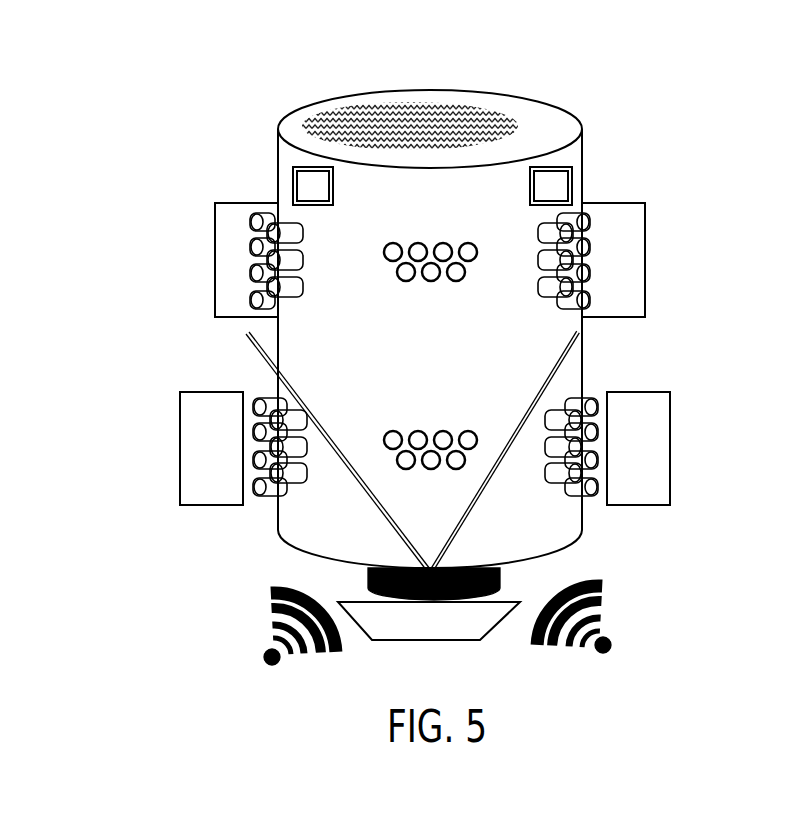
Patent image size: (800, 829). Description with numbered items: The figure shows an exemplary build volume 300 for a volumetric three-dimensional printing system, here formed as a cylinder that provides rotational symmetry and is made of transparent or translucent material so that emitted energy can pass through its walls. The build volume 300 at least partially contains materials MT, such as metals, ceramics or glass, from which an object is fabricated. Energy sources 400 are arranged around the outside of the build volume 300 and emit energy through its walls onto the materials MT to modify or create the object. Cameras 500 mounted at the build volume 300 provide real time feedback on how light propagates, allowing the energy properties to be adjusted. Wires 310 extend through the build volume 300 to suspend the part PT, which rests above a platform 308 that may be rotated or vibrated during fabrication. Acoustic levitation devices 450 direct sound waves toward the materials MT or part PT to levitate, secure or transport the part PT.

The build volume 300 is at (640, 90).
The materials MT is at (335, 122).
The camera 500 is at (303, 190).
The energy source 400 is at (232, 245).
The wires 310 is at (258, 354).
The part PT is at (500, 580).
The platform 308 is at (463, 618).
The acoustic levitation device 450 is at (263, 652).